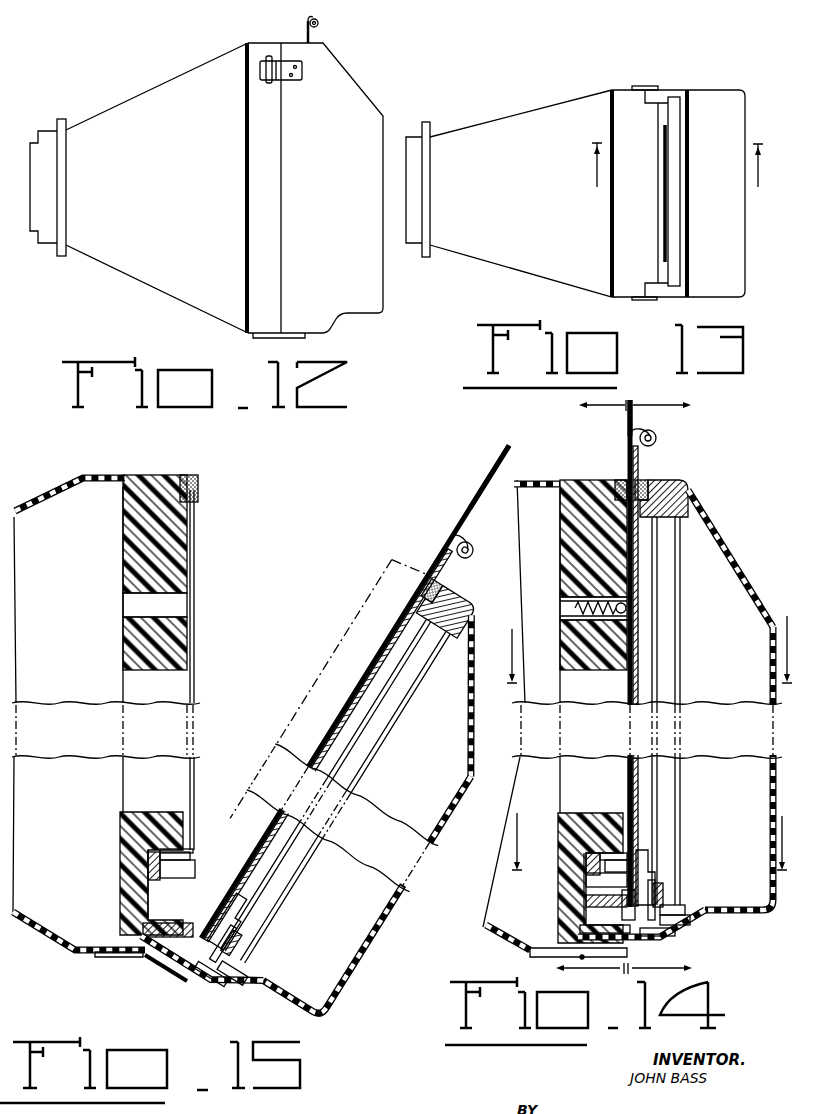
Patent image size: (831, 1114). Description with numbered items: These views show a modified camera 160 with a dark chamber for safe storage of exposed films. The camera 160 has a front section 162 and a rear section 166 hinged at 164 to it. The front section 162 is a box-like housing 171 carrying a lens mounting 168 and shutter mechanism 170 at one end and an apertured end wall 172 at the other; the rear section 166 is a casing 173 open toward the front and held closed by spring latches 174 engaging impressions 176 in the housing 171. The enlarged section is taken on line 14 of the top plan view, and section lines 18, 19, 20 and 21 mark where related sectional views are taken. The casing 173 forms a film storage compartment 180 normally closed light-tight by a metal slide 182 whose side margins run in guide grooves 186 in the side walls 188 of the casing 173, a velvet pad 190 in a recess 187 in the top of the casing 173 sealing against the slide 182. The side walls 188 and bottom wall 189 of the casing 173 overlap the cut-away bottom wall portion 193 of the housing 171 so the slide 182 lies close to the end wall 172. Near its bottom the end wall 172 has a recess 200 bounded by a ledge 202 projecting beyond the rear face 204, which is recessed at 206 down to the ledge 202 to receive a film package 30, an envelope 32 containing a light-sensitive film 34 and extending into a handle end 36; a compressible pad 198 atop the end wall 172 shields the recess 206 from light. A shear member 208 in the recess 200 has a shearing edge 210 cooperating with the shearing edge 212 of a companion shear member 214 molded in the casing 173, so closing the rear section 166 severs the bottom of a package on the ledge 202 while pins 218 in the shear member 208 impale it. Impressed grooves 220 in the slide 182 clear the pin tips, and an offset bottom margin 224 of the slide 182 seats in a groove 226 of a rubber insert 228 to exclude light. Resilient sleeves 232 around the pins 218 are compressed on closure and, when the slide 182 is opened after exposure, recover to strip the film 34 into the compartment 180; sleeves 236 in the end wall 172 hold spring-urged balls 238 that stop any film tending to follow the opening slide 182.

In FIG. 13, the section line 14— 14 is at (675, 179).
In FIG. 14, the section line 18— 18 is at (645, 640).
In FIG. 14, the section line 19— 19 is at (650, 831).
In FIG. 14, the section line 20— 20 is at (672, 686).
In FIG. 14, the section line 21— 21 is at (579, 686).
In FIG. 12, the film package 30 is at (305, 37).
In FIG. 13, the film package 30 is at (670, 240).
In FIG. 14, the film package 30 is at (625, 455).
In FIG. 15, the film package 30 is at (485, 485).
In FIG. 14, the envelope 32 is at (652, 434).
In FIG. 14, the light-sensitive film 34 is at (623, 771).
In FIG. 14, the handle end of envelope 36 is at (625, 428).
In FIG. 15, the handle end of envelope 36 is at (512, 448).
In FIG. 12, the camera 160 is at (199, 58).
In FIG. 13, the camera 160 is at (598, 82).
In FIG. 14, the camera 160 is at (580, 468).
In FIG. 15, the camera 160 is at (212, 476).
In FIG. 12, the front section 162 is at (235, 50).
In FIG. 13, the front section 162 is at (515, 113).
In FIG. 14, the front section 162 is at (530, 479).
In FIG. 15, the front section 162 is at (55, 479).
In FIG. 12, the hinge 164 is at (280, 338).
In FIG. 14, the hinge 164 is at (578, 952).
In FIG. 15, the hinge 164 is at (142, 960).
In FIG. 12, the rear section 166 is at (362, 87).
In FIG. 13, the rear section 166 is at (723, 88).
In FIG. 14, the rear section 166 is at (706, 520).
In FIG. 15, the rear section 166 is at (475, 665).
In FIG. 12, the lens mounting 168 is at (40, 130).
In FIG. 13, the lens mounting 168 is at (414, 190).
In FIG. 12, the shutter mechanism 170 is at (63, 119).
In FIG. 13, the shutter mechanism 170 is at (430, 124).
In FIG. 12, the box-like housing 171 is at (166, 97).
In FIG. 13, the box-like housing 171 is at (491, 118).
In FIG. 14, the box-like housing 171 is at (500, 943).
In FIG. 15, the box-like housing 171 is at (30, 500).
In FIG. 14, the end wall 172 is at (570, 548).
In FIG. 15, the end wall 172 is at (182, 575).
In FIG. 12, the casing 173 is at (360, 285).
In FIG. 13, the casing 173 is at (725, 283).
In FIG. 14, the casing 173 is at (725, 552).
In FIG. 15, the casing 173 is at (472, 703).
In FIG. 12, the spring latches 174 is at (283, 62).
In FIG. 13, the spring latches 174 is at (650, 87).
In FIG. 12, the impressions 176 is at (269, 56).
In FIG. 14, the film storage compartment 180 is at (733, 603).
In FIG. 15, the film storage compartment 180 is at (378, 903).
In FIG. 12, the slide 182 is at (318, 21).
In FIG. 13, the slide 182 is at (679, 100).
In FIG. 14, the slide 182 is at (637, 675).
In FIG. 15, the slide 182 is at (375, 670).
In FIG. 14, the guide grooves 186 is at (666, 711).
In FIG. 15, the guide grooves 186 is at (469, 603).
In FIG. 14, the recess in top of casing 187 is at (672, 488).
In FIG. 15, the recess in top of casing 187 is at (466, 590).
In FIG. 15, the side walls of casing 188 is at (393, 553).
In FIG. 14, the bottom wall of casing 189 is at (640, 950).
In FIG. 15, the bottom wall of casing 189 is at (172, 978).
In FIG. 14, the pad 190 is at (647, 480).
In FIG. 15, the pad 190 is at (446, 589).
In FIG. 14, the cut-away bottom wall portion 193 is at (580, 930).
In FIG. 15, the cut-away bottom wall portion 193 is at (115, 958).
In FIG. 14, the pad 198 is at (620, 480).
In FIG. 15, the pad 198 is at (192, 477).
In FIG. 14, the recess 200 is at (630, 857).
In FIG. 15, the recess 200 is at (186, 851).
In FIG. 14, the ledge 202 is at (586, 912).
In FIG. 15, the ledge 202 is at (168, 932).
In FIG. 15, the rear face of end wall 204 is at (192, 621).
In FIG. 14, the recess in rear face 206 is at (624, 668).
In FIG. 15, the recess in rear face 206 is at (191, 650).
In FIG. 14, the shear member 208 is at (587, 878).
In FIG. 15, the shear member 208 is at (150, 880).
In FIG. 14, the shearing edge 210 is at (580, 895).
In FIG. 15, the shearing edge 210 is at (125, 910).
In FIG. 14, the shearing edge 212 is at (656, 890).
In FIG. 15, the shearing edge 212 is at (205, 930).
In FIG. 14, the companion shear member 214 is at (675, 936).
In FIG. 15, the companion shear member 214 is at (205, 990).
In FIG. 14, the pins 218 is at (586, 860).
In FIG. 15, the pins 218 is at (148, 866).
In FIG. 14, the impressed grooves 220 is at (650, 878).
In FIG. 15, the impressed grooves 220 is at (240, 912).
In FIG. 14, the bottom margin of slide 224 is at (664, 905).
In FIG. 15, the bottom margin of slide 224 is at (255, 950).
In FIG. 14, the groove 226 is at (685, 912).
In FIG. 14, the insert 228 is at (690, 922).
In FIG. 15, the insert 228 is at (240, 975).
In FIG. 14, the sleeve 232 is at (628, 866).
In FIG. 15, the sleeve 232 is at (150, 855).
In FIG. 14, the sleeves 236 is at (565, 600).
In FIG. 14, the spring-urged ball 238 is at (636, 606).